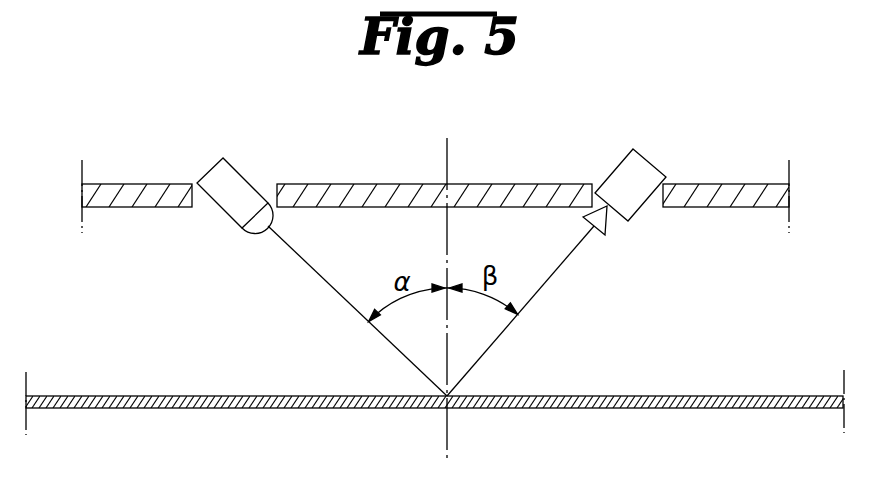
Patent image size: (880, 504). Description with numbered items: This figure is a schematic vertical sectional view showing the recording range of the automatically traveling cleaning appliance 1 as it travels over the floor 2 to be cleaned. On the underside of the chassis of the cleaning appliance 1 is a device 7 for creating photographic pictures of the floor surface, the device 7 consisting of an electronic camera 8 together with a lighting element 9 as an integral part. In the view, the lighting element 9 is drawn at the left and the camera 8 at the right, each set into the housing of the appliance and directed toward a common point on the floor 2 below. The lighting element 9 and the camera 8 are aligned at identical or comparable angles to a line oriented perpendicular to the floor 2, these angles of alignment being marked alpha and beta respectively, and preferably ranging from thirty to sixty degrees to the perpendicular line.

The cleaning appliance 1 is at (753, 147).
The floor 2 is at (782, 397).
The device 7 is at (336, 142).
The electronic camera 8 is at (647, 173).
The lighting element 9 is at (223, 183).